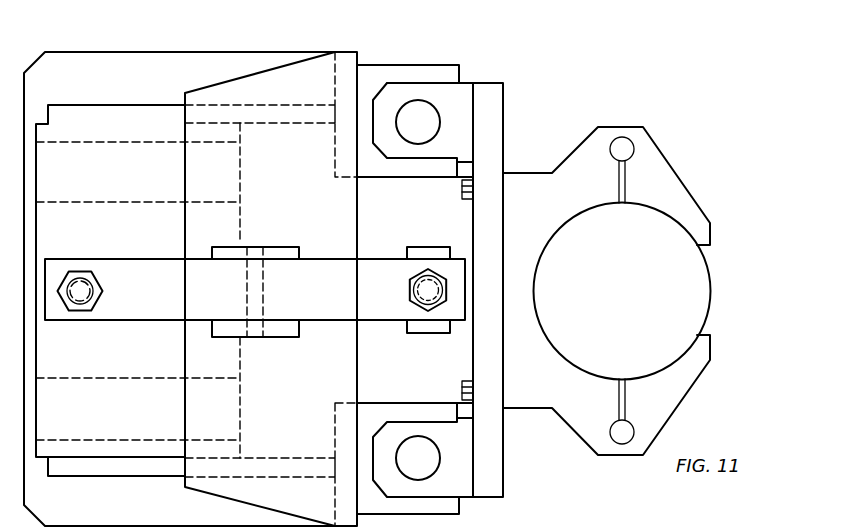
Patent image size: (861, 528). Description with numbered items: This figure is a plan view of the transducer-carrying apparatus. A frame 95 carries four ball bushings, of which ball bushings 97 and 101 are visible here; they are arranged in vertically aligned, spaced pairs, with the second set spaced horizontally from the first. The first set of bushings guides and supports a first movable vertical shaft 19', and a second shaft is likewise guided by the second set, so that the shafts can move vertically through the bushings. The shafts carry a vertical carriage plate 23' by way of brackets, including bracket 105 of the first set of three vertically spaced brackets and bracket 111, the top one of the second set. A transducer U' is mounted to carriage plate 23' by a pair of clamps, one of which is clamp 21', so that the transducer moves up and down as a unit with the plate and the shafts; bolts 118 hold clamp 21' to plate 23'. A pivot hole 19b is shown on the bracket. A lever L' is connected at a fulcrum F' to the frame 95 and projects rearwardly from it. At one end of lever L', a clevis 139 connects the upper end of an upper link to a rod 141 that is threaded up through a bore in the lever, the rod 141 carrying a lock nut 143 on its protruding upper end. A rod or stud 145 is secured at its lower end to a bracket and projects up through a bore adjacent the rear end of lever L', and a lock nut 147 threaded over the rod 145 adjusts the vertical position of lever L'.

The frame 95 is at (133, 506).
The ball bushing 97 is at (460, 508).
The ball bushing 101 is at (452, 75).
The bracket 105 is at (460, 470).
The bracket 111 is at (458, 102).
The bolt 118 is at (462, 188).
The clevis 139 is at (452, 250).
The rod 141 is at (430, 274).
The lock nut 143 is at (417, 278).
The rod or stud 145 is at (80, 280).
The lock nut 147 is at (96, 280).
The pivot hole 19b is at (440, 120).
The first movable vertical shaft 19' is at (471, 453).
The vertical carriage plate 23' is at (516, 290).
The clamp 21' is at (614, 291).
The fulcrum F' is at (255, 276).
The lever L' is at (255, 289).
The transducer U' is at (622, 291).